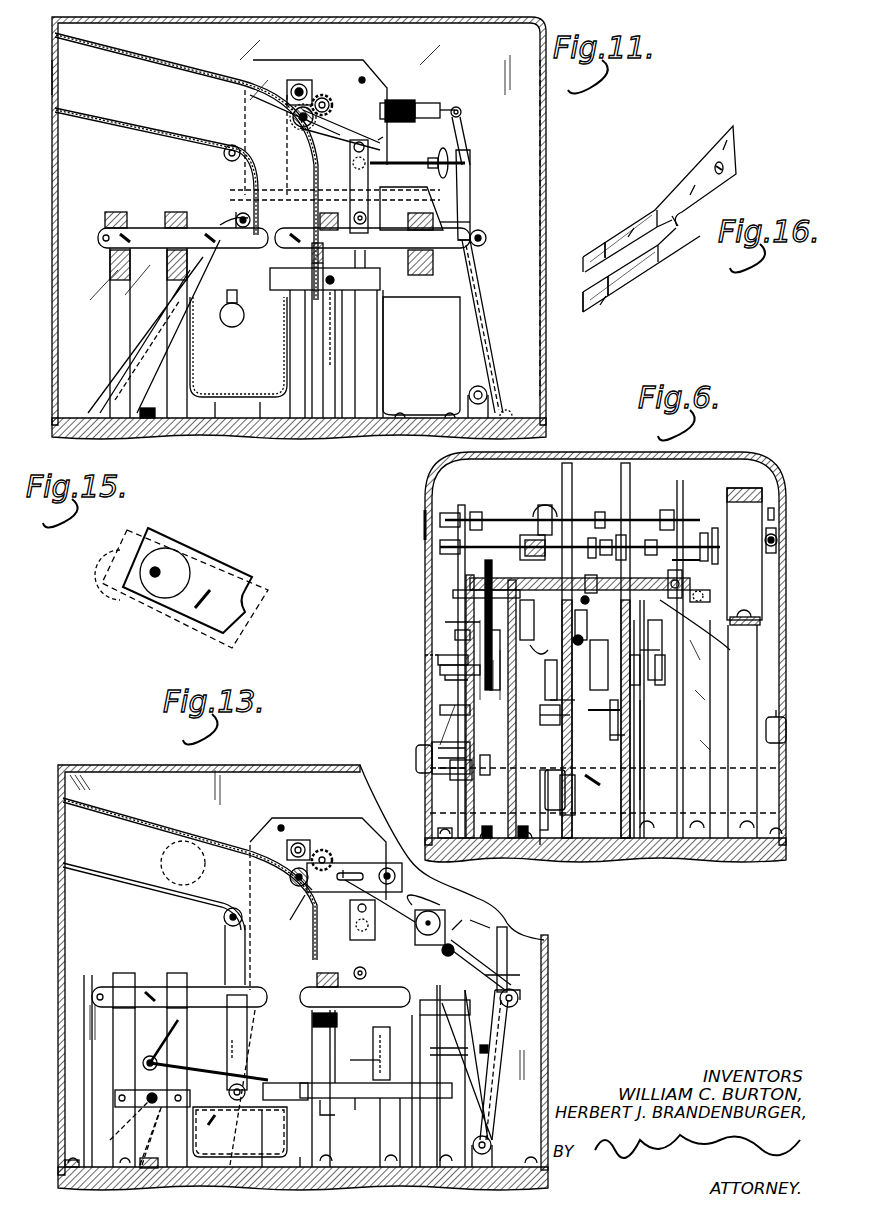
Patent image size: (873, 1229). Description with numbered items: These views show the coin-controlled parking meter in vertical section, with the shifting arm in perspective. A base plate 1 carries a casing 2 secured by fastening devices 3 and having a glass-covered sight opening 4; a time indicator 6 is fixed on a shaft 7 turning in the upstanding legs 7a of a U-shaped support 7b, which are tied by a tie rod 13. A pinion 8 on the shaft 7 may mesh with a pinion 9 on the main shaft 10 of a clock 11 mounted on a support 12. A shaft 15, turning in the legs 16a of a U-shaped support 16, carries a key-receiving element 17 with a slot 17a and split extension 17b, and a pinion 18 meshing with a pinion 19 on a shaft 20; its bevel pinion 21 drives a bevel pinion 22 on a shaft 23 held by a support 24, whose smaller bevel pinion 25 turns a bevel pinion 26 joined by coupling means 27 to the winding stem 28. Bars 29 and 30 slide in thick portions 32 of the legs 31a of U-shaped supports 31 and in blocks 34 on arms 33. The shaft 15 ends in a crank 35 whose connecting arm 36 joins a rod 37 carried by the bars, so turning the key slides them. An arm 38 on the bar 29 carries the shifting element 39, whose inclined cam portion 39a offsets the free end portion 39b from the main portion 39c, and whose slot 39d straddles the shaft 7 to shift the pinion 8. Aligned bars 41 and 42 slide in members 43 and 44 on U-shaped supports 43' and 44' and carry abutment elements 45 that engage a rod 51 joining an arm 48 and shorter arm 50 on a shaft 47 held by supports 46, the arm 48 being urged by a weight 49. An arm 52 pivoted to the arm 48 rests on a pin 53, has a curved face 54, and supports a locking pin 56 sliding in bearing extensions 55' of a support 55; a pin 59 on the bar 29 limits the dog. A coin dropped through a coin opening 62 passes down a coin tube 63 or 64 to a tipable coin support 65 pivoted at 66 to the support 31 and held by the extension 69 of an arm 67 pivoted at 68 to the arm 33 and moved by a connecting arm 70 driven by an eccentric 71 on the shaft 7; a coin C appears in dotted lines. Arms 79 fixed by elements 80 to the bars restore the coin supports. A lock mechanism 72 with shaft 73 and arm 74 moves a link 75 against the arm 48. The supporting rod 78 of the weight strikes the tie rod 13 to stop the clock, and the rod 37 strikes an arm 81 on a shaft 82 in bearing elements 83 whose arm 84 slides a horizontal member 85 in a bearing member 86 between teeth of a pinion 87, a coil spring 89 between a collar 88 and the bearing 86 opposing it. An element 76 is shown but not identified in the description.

In FIG. 11, the base plate 1 is at (352, 437).
In FIG. 6, the base plate 1 is at (672, 860).
In FIG. 13, the base plate 1 is at (549, 1182).
In FIG. 11, the casing 2 is at (52, 212).
In FIG. 6, the casing 2 is at (425, 527).
In FIG. 13, the casing 2 is at (60, 765).
In FIG. 6, the fastening devices 3 is at (446, 828).
In FIG. 13, the fastening devices 3 is at (70, 1160).
In FIG. 6, the sight opening 4 is at (425, 660).
In FIG. 6, the time indicator 6 is at (424, 545).
In FIG. 11, the shaft 7 is at (293, 113).
In FIG. 6, the shaft 7 is at (478, 545).
In FIG. 15, the shaft 7 is at (163, 567).
In FIG. 13, the shaft 7 is at (290, 879).
In FIG. 11, the upstanding legs 7a is at (292, 400).
In FIG. 6, the upstanding legs 7a is at (462, 505).
In FIG. 13, the upstanding legs 7a is at (300, 840).
In FIG. 11, the U-shaped support 7b is at (307, 420).
In FIG. 6, the U-shaped support 7b is at (560, 845).
In FIG. 13, the U-shaped support 7b is at (515, 920).
In FIG. 6, the pinion 8 is at (704, 533).
In FIG. 11, the pinion 9 is at (328, 98).
In FIG. 6, the pinion 9 is at (715, 528).
In FIG. 13, the pinion 9 is at (326, 850).
In FIG. 11, the main shaft 10 is at (322, 95).
In FIG. 6, the main shaft 10 is at (722, 555).
In FIG. 15, the main shaft 10 is at (256, 586).
In FIG. 11, the clock 11 is at (380, 86).
In FIG. 6, the clock 11 is at (740, 488).
In FIG. 15, the clock 11 is at (175, 570).
In FIG. 13, the clock 11 is at (290, 818).
In FIG. 11, the support 12 is at (470, 196).
In FIG. 6, the support 12 is at (745, 680).
In FIG. 13, the support 12 is at (137, 1036).
In FIG. 11, the tie rod 13 is at (299, 80).
In FIG. 6, the tie rod 13 is at (590, 520).
In FIG. 13, the tie rod 13 is at (304, 846).
In FIG. 6, the shaft 15 is at (455, 640).
In FIG. 13, the shaft 15 is at (224, 1096).
In FIG. 6, the U-shaped support 16 is at (508, 840).
In FIG. 13, the U-shaped support 16 is at (425, 1117).
In FIG. 6, the upstanding legs 16a is at (440, 710).
In FIG. 6, the key-receiving element 17 is at (440, 670).
In FIG. 6, the slot 17a is at (438, 660).
In FIG. 6, the split extension 17b is at (445, 680).
In FIG. 6, the pinion 18 is at (455, 640).
In FIG. 6, the pinion 19 is at (445, 625).
In FIG. 6, the shaft 20 is at (530, 620).
In FIG. 13, the shaft 20 is at (415, 906).
In FIG. 6, the bevel pinion 21 is at (742, 630).
In FIG. 13, the bevel pinion 21 is at (425, 905).
In FIG. 11, the bevel pinion 22 is at (450, 152).
In FIG. 13, the bevel pinion 22 is at (455, 935).
In FIG. 11, the shaft 23 is at (406, 163).
In FIG. 6, the shaft 23 is at (688, 563).
In FIG. 11, the support 24 is at (467, 185).
In FIG. 6, the support 24 is at (700, 718).
In FIG. 6, the bevel pinion 25 is at (740, 648).
In FIG. 11, the bevel pinion 26 is at (335, 165).
In FIG. 6, the bevel pinion 26 is at (712, 598).
In FIG. 6, the coupling means 27 is at (690, 590).
In FIG. 6, the winding stem 28 is at (725, 596).
In FIG. 6, the bar 29 is at (625, 665).
In FIG. 13, the bar 29 is at (522, 975).
In FIG. 11, the bar 30 is at (442, 222).
In FIG. 6, the bar 30 is at (660, 670).
In FIG. 11, the U-shaped supports 31 is at (321, 430).
In FIG. 6, the U-shaped supports 31 is at (577, 795).
In FIG. 13, the U-shaped supports 31 is at (333, 1152).
In FIG. 11, the upstanding legs 31a is at (333, 368).
In FIG. 6, the upstanding legs 31a is at (620, 755).
In FIG. 11, the thick portions 32 is at (320, 220).
In FIG. 11, the arms 33 is at (386, 222).
In FIG. 6, the arms 33 is at (588, 618).
In FIG. 13, the arms 33 is at (497, 960).
In FIG. 11, the blocks 34 is at (435, 262).
In FIG. 6, the blocks 34 is at (545, 690).
In FIG. 6, the crank 35 is at (536, 648).
In FIG. 13, the crank 35 is at (520, 926).
In FIG. 13, the connecting arm 36 is at (522, 995).
In FIG. 11, the rod 37 is at (487, 238).
In FIG. 13, the rod 37 is at (520, 1005).
In FIG. 13, the arm 38 is at (350, 920).
In FIG. 16, the shifting element 39 is at (697, 165).
In FIG. 6, the shifting element 39 is at (528, 547).
In FIG. 13, the shifting element 39 is at (368, 865).
In FIG. 16, the inclined intermediate cam portion 39a is at (660, 266).
In FIG. 16, the free end portion 39b is at (602, 243).
In FIG. 16, the main portion 39c is at (693, 226).
In FIG. 13, the main portion 39c is at (306, 886).
In FIG. 16, the slot 39d is at (588, 304).
In FIG. 13, the slot 39d is at (345, 868).
In FIG. 13, the bar 41 is at (88, 990).
In FIG. 11, the bar 42 is at (150, 230).
In FIG. 13, the bar 42 is at (296, 993).
In FIG. 11, the member 43 is at (117, 296).
In FIG. 13, the member 43 is at (122, 1056).
In FIG. 11, the U-shaped support 43' is at (147, 326).
In FIG. 13, the U-shaped support 43' is at (165, 1087).
In FIG. 11, the member 44 is at (178, 296).
In FIG. 13, the member 44 is at (174, 1057).
In FIG. 11, the U-shaped support 44' is at (232, 347).
In FIG. 13, the U-shaped support 44' is at (240, 1132).
In FIG. 11, the upstanding abutment element 45 is at (250, 226).
In FIG. 13, the upstanding abutment element 45 is at (287, 916).
In FIG. 11, the upstanding supports 46 is at (147, 430).
In FIG. 13, the upstanding supports 46 is at (225, 950).
In FIG. 11, the shaft 47 is at (233, 145).
In FIG. 6, the shaft 47 is at (468, 580).
In FIG. 13, the shaft 47 is at (224, 917).
In FIG. 6, the arm 48 is at (552, 508).
In FIG. 13, the arm 48 is at (265, 1110).
In FIG. 6, the weight 49 is at (545, 505).
In FIG. 11, the shorter arm 50 is at (224, 158).
In FIG. 11, the rod 51 is at (246, 228).
In FIG. 6, the rod 51 is at (584, 640).
In FIG. 6, the arm 52 is at (606, 779).
In FIG. 13, the arm 52 is at (490, 1090).
In FIG. 6, the pin 53 is at (540, 720).
In FIG. 13, the pin 53 is at (337, 1102).
In FIG. 13, the curved face 54 is at (297, 1068).
In FIG. 6, the support 55 is at (557, 695).
In FIG. 13, the support 55 is at (364, 1084).
In FIG. 13, the bearing extensions 55' is at (401, 1067).
In FIG. 6, the locking pin 56 is at (610, 728).
In FIG. 13, the locking pin 56 is at (395, 1050).
In FIG. 13, the pin 59 is at (355, 998).
In FIG. 11, the coin opening 62 is at (52, 74).
In FIG. 6, the coin opening 62 is at (590, 602).
In FIG. 6, the coin tube 63 is at (562, 476).
In FIG. 13, the coin tube 63 is at (125, 832).
In FIG. 11, the coin tube 64 is at (174, 75).
In FIG. 6, the coin tube 64 is at (628, 463).
In FIG. 13, the coin tube 64 is at (130, 818).
In FIG. 11, the tipable coin support 65 is at (270, 290).
In FIG. 13, the tipable coin support 65 is at (256, 1025).
In FIG. 11, the pivot 66 is at (332, 286).
In FIG. 13, the pivot 66 is at (362, 1092).
In FIG. 11, the arm 67 is at (352, 180).
In FIG. 6, the arm 67 is at (664, 650).
In FIG. 11, the pivot 68 is at (354, 214).
In FIG. 13, the pivot 68 is at (355, 970).
In FIG. 11, the extension 69 is at (372, 292).
In FIG. 13, the extension 69 is at (428, 1020).
In FIG. 11, the connecting arm 70 is at (322, 142).
In FIG. 6, the connecting arm 70 is at (595, 538).
In FIG. 11, the eccentric 71 is at (292, 122).
In FIG. 6, the eccentric 71 is at (640, 535).
In FIG. 6, the lock mechanism 72 is at (416, 752).
In FIG. 13, the rotatable shaft 73 is at (122, 1110).
In FIG. 13, the arm 74 is at (150, 1082).
In FIG. 6, the link 75 is at (538, 716).
In FIG. 11, the rod 76 is at (234, 390).
In FIG. 6, the rod 76 is at (650, 770).
In FIG. 13, the rod 76 is at (233, 1131).
In FIG. 6, the supporting rod 78 is at (500, 545).
In FIG. 11, the horizontal arms 79 is at (384, 354).
In FIG. 6, the horizontal arms 79 is at (608, 720).
In FIG. 13, the horizontal arms 79 is at (346, 1058).
In FIG. 11, the elements 80 is at (468, 280).
In FIG. 13, the elements 80 is at (503, 1032).
In FIG. 11, the upstanding arm 81 is at (480, 318).
In FIG. 13, the upstanding arm 81 is at (497, 1088).
In FIG. 11, the shaft 82 is at (496, 390).
In FIG. 13, the shaft 82 is at (495, 1142).
In FIG. 11, the bearing elements 83 is at (520, 397).
In FIG. 11, the upstanding arm 84 is at (472, 133).
In FIG. 13, the upstanding arm 84 is at (520, 950).
In FIG. 11, the horizontal member 85 is at (463, 120).
In FIG. 6, the horizontal member 85 is at (765, 536).
In FIG. 13, the horizontal member 85 is at (432, 912).
In FIG. 11, the bearing member 86 is at (390, 106).
In FIG. 6, the bearing member 86 is at (766, 546).
In FIG. 6, the pinion 87 is at (768, 512).
In FIG. 11, the collar 88 is at (447, 108).
In FIG. 11, the coil spring 89 is at (405, 102).
In FIG. 13, the coin C is at (161, 863).